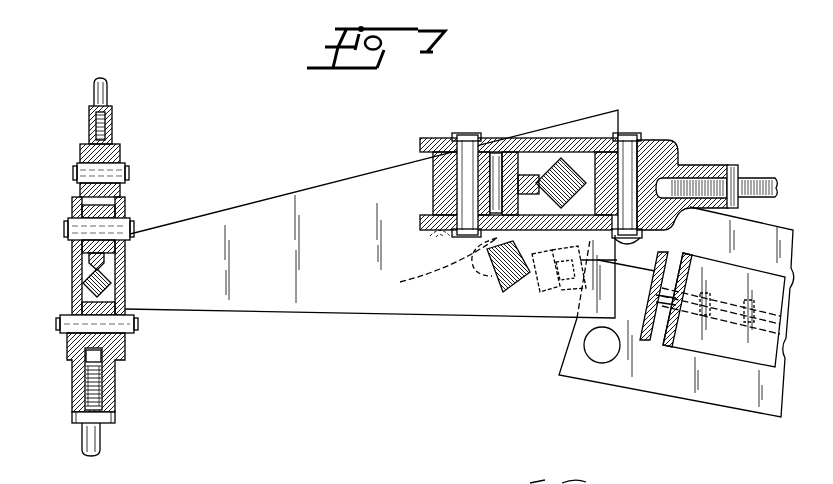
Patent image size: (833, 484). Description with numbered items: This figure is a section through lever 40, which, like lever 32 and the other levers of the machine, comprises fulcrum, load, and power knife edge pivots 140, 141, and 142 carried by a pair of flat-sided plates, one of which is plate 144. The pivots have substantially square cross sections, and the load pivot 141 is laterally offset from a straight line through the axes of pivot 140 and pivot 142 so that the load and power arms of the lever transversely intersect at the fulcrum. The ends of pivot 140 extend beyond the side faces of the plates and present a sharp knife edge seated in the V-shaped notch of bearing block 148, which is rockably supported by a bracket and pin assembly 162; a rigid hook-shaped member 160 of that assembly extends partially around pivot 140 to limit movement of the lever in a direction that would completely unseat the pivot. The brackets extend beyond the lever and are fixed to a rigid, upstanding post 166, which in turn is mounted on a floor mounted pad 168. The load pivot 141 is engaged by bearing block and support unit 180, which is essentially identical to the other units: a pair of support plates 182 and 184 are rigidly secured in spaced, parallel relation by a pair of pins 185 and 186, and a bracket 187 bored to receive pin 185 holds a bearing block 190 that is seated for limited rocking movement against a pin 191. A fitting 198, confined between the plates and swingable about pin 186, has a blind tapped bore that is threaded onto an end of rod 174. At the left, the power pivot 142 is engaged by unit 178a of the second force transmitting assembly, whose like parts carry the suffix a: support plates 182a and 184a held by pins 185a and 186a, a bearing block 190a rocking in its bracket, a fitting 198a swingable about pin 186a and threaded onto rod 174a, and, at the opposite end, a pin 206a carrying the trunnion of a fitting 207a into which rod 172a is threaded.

The rod 172a is at (107, 87).
The fitting 207a is at (112, 128).
The pin 206a is at (126, 174).
The pin 185a is at (131, 227).
The support plate 184a is at (72, 278).
The support plate 182a is at (124, 255).
The bearing block 190a is at (104, 268).
The power knife edge pivot 142 is at (110, 285).
The pin 186a is at (70, 335).
The bearing block and support unit 178a is at (116, 381).
The fitting 198a is at (72, 397).
The rod 174a is at (102, 440).
The lever 40 is at (293, 153).
The plate 144 is at (357, 238).
The bracket 187 is at (437, 165).
The support plate 182 is at (432, 231).
The pin 185 is at (463, 180).
The pin 186 is at (626, 152).
The pin 191 is at (497, 153).
The bearing block 190 is at (530, 178).
The load knife edge pivot 141 is at (577, 167).
The support plate 184 is at (667, 140).
The fitting 198 is at (686, 164).
The bearing block and support unit 180 is at (729, 154).
The rod 174 is at (752, 198).
The fulcrum knife edge pivot 140 is at (505, 289).
The hook-shaped member 160 is at (430, 267).
The bearing block 148 is at (532, 290).
The bracket and pin assembly 162 is at (546, 298).
The post 166 is at (642, 390).
The pad 168 is at (707, 395).
The lever 32 is at (569, 479).